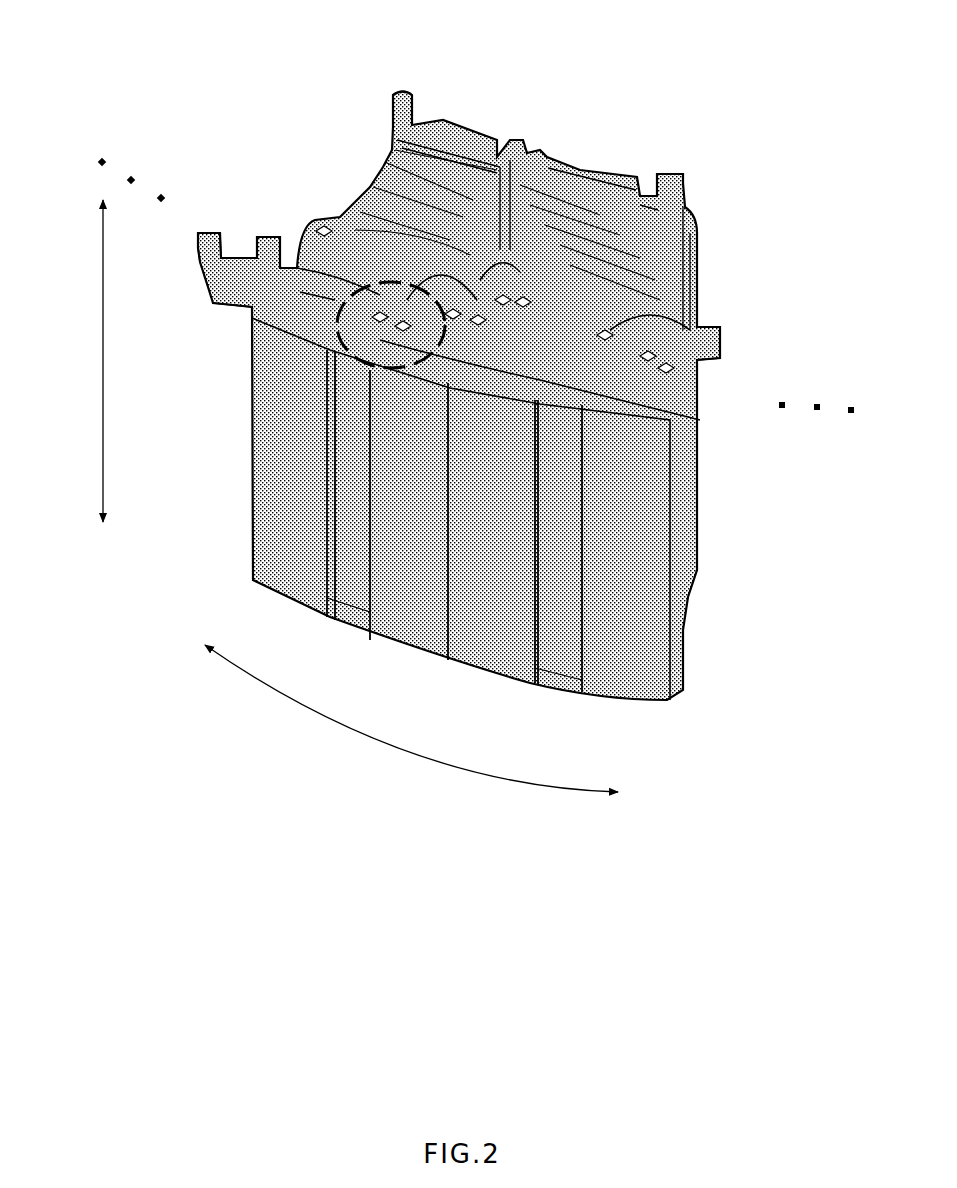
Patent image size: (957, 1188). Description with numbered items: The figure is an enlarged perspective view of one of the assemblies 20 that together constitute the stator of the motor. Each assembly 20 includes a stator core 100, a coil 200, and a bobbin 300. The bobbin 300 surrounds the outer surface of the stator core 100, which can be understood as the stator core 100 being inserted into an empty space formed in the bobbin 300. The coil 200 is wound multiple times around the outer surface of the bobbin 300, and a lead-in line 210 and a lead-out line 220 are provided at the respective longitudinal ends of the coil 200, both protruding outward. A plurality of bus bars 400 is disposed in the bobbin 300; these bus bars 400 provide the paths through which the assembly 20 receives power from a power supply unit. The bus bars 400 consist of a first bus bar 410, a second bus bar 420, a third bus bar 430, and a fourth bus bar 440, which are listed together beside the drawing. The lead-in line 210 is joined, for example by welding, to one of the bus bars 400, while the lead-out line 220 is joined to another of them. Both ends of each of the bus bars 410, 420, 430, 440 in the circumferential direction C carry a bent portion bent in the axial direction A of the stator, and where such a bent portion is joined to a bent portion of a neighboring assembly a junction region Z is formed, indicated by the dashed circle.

The assembly 20 is at (752, 251).
The stator core 100 is at (605, 215).
The coil 200 is at (667, 293).
The lead-in line 210 is at (702, 338).
The lead-out line 220 is at (690, 196).
The bobbin 300 is at (248, 260).
The bus bars 400 is at (822, 475).
The first bus bar 410 is at (198, 252).
The second bus bar 420 is at (312, 232).
The third bus bar 430 is at (260, 237).
The fourth bus bar 440 is at (402, 92).
The junction region Z is at (373, 283).
The axial direction A is at (103, 358).
The circumferential direction C is at (410, 752).